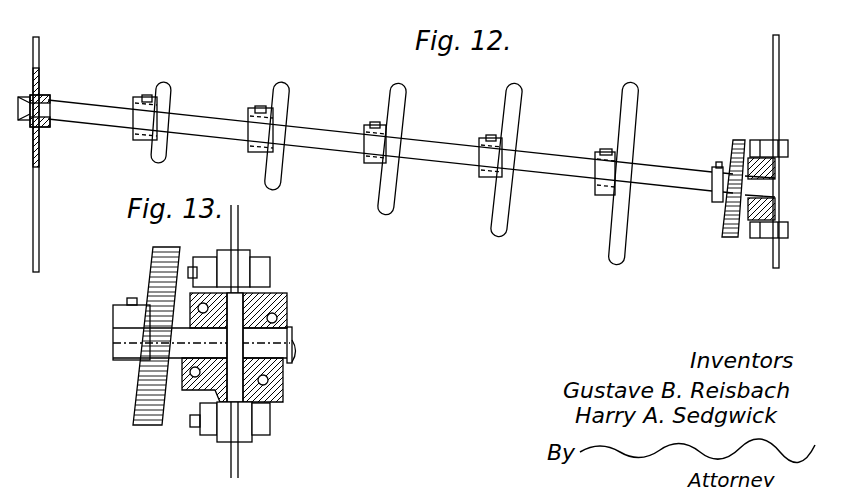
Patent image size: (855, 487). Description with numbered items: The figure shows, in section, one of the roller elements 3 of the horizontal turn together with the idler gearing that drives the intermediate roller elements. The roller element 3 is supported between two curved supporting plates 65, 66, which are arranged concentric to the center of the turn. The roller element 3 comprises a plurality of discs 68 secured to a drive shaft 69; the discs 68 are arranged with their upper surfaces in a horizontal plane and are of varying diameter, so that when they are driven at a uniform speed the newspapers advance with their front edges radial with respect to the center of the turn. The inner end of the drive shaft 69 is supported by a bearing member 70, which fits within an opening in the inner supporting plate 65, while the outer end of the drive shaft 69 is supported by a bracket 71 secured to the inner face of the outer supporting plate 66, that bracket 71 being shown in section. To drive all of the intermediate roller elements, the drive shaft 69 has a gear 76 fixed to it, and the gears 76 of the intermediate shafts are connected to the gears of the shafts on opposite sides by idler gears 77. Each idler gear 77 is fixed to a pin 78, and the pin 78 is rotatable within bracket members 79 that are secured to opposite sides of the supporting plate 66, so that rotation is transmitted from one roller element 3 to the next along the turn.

In FIG. 12, the roller element 3 is at (443, 193).
In FIG. 12, the curved supporting plate 65 is at (39, 58).
In FIG. 12, the curved supporting plate 66 is at (773, 76).
In FIG. 12, the disc 68 is at (174, 94).
In FIG. 12, the drive shaft 69 is at (578, 146).
In FIG. 12, the bearing member 70 is at (46, 95).
In FIG. 12, the bracket 71 is at (776, 206).
In FIG. 12, the gear 76 is at (729, 238).
In FIG. 13, the idler gear 77 is at (155, 263).
In FIG. 13, the pin 78 is at (118, 332).
In FIG. 13, the bracket member 79 is at (192, 298).